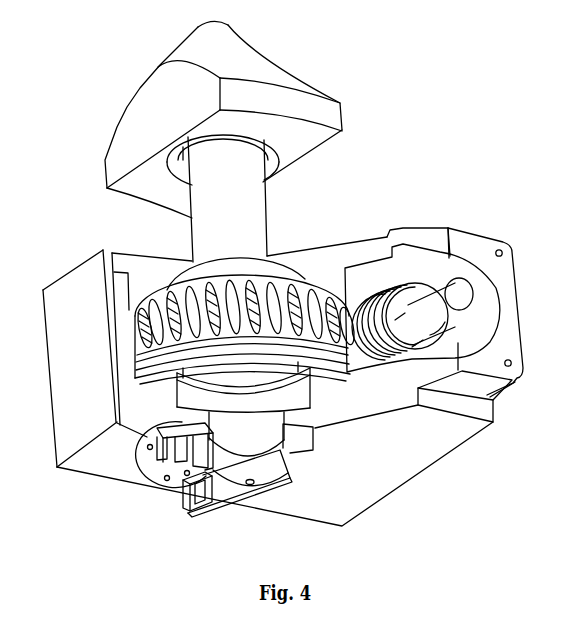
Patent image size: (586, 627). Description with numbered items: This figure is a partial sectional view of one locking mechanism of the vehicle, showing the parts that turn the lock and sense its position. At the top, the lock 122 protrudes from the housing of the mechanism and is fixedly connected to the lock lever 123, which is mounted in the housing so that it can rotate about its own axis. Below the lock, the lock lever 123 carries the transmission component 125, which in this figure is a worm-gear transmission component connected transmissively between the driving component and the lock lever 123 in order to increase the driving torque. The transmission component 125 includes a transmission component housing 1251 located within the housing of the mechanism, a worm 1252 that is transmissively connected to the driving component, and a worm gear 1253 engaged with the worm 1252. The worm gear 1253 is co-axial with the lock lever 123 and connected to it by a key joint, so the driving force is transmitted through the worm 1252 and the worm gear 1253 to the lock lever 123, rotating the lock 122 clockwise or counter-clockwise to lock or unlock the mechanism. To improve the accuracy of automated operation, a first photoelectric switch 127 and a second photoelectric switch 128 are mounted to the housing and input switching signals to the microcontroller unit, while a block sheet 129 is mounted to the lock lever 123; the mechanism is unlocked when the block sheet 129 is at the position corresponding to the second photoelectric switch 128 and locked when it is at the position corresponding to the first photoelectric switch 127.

The lock 122 is at (262, 63).
The lock lever 123 is at (203, 226).
The transmission component 125 is at (492, 182).
The transmission component housing 1251 is at (388, 250).
The worm 1252 is at (459, 290).
The worm gear 1253 is at (283, 287).
The first photoelectric switch 127 is at (160, 452).
The second photoelectric switch 128 is at (183, 498).
The block sheet 129 is at (218, 505).